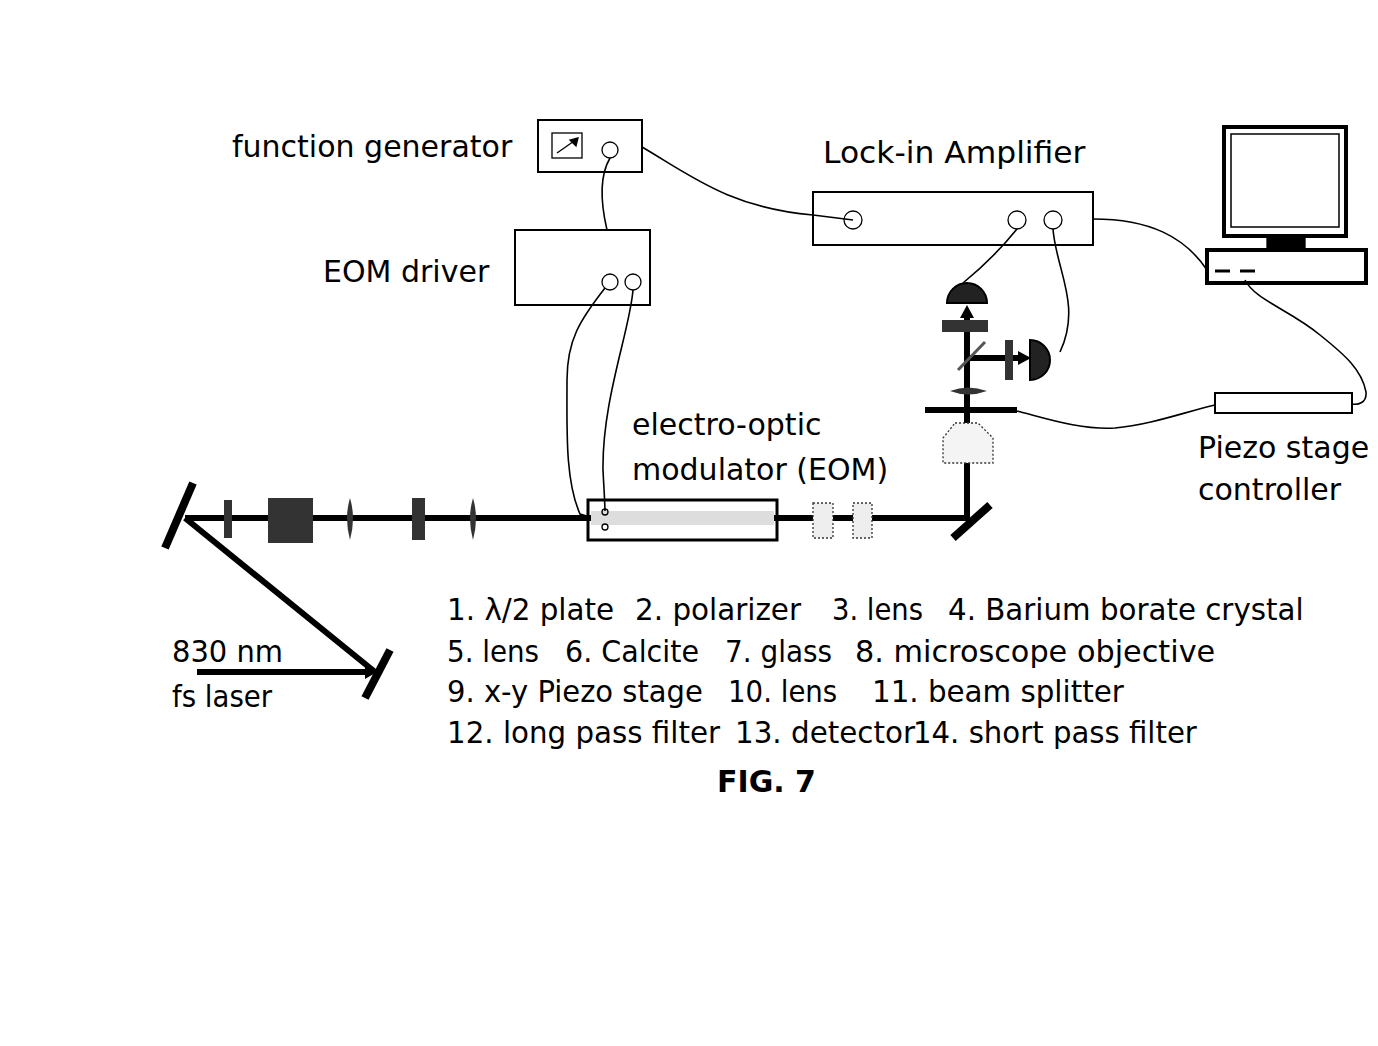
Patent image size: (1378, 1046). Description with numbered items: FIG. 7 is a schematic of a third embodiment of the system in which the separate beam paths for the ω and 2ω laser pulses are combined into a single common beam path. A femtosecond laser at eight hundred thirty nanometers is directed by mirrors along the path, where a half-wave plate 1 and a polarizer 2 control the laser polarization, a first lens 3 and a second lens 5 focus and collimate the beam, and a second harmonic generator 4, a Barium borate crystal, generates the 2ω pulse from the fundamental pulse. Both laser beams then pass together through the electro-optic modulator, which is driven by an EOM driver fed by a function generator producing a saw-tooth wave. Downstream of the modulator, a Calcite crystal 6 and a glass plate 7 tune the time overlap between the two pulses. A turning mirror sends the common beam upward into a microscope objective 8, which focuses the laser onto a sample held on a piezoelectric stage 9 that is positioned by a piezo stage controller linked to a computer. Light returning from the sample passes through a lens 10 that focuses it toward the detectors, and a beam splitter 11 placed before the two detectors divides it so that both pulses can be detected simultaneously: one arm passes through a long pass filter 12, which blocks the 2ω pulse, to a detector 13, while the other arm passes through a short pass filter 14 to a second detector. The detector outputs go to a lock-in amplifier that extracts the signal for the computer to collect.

The half-wave plate 1 is at (226, 497).
The polarizer 2 is at (290, 499).
The lens 3 is at (345, 498).
The second harmonic generator 4 is at (417, 498).
The lens 5 is at (472, 498).
The Calcite crystal 6 is at (822, 541).
The glass plate 7 is at (862, 541).
The microscope objective 8 is at (1000, 450).
The piezoelectric stage 9 is at (1017, 418).
The lens 10 is at (1000, 395).
The beam splitter 11 is at (952, 362).
The long pass filter 12 is at (945, 328).
The detector 13 is at (942, 293).
The short pass filter 14 is at (1013, 330).